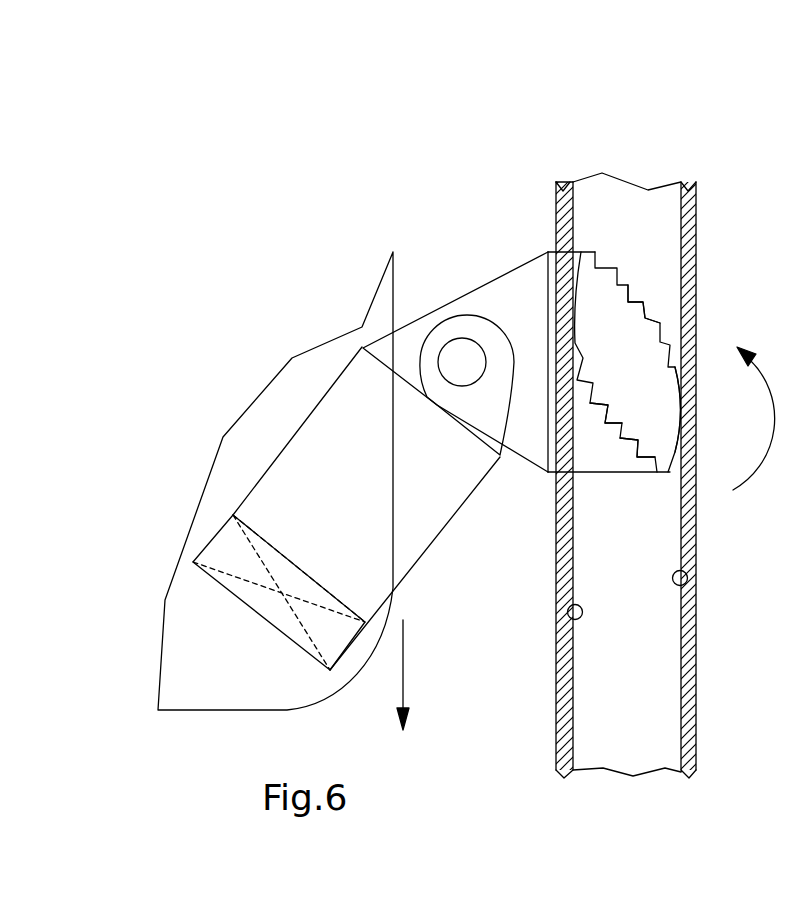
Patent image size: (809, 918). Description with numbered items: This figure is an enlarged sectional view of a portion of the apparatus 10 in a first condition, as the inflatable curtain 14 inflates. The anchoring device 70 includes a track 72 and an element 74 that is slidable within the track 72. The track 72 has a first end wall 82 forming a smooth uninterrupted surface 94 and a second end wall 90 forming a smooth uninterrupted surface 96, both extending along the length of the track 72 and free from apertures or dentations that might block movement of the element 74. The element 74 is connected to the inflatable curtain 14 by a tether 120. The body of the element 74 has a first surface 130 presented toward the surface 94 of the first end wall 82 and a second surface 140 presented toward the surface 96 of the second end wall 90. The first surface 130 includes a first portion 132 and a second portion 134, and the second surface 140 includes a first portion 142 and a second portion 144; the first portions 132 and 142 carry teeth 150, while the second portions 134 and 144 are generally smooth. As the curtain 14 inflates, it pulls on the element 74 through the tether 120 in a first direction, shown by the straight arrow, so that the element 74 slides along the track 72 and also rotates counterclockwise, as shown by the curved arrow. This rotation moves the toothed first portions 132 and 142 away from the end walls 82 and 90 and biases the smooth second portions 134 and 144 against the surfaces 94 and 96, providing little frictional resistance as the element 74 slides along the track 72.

The apparatus 10 is at (625, 125).
The inflatable curtain 14 is at (383, 310).
The anchoring device 70 is at (696, 122).
The track 72 is at (555, 205).
The element 74 is at (510, 307).
The first end wall 82 is at (693, 633).
The second end wall 90 is at (567, 696).
The smooth uninterrupted surface 94 is at (688, 579).
The smooth uninterrupted surface 96 is at (569, 617).
The tether 120 is at (412, 495).
The first surface 130 is at (675, 317).
The first portion 132 is at (640, 300).
The second portion 134 is at (675, 452).
The second surface 140 is at (598, 428).
The first portion 142 is at (632, 422).
The second portion 144 is at (560, 264).
The teeth 150 is at (640, 308).